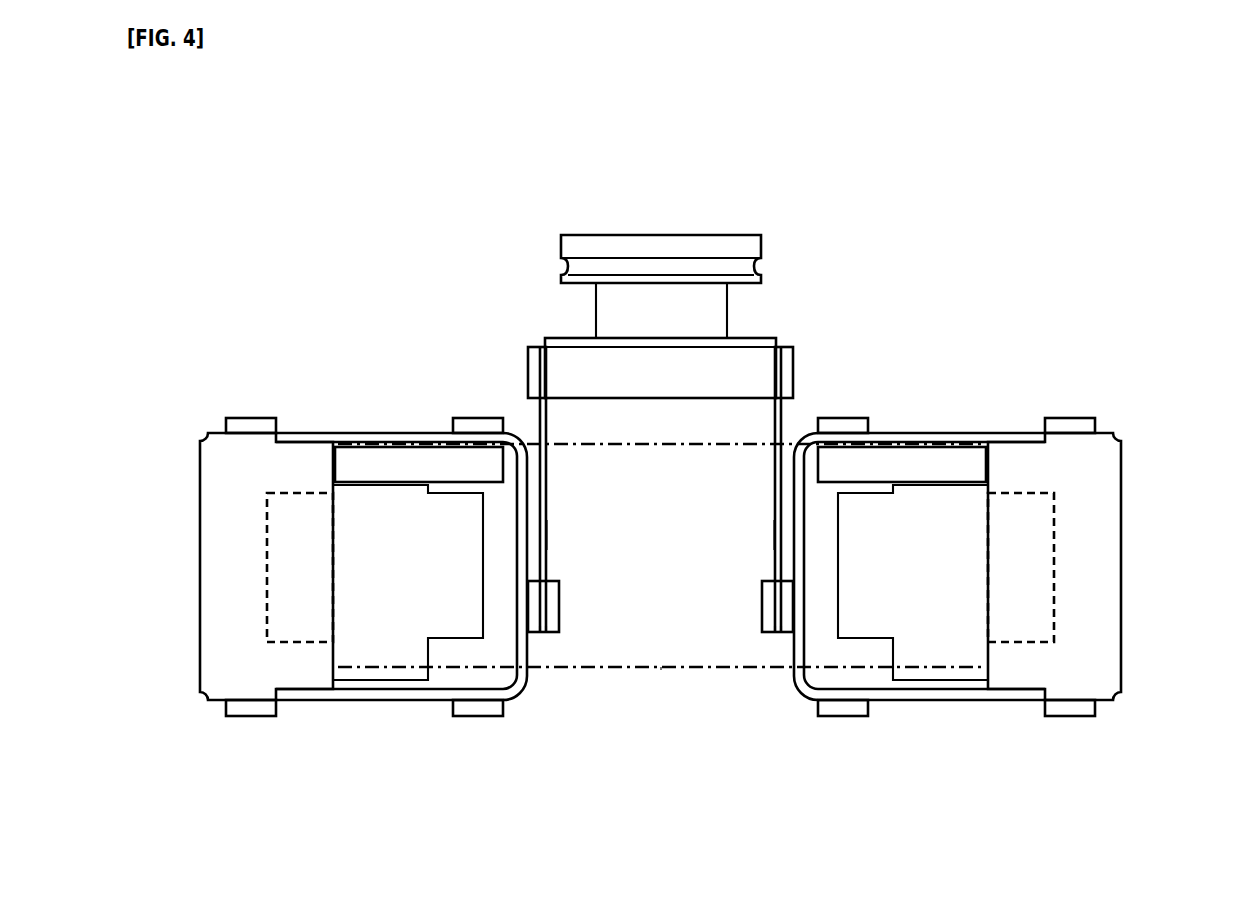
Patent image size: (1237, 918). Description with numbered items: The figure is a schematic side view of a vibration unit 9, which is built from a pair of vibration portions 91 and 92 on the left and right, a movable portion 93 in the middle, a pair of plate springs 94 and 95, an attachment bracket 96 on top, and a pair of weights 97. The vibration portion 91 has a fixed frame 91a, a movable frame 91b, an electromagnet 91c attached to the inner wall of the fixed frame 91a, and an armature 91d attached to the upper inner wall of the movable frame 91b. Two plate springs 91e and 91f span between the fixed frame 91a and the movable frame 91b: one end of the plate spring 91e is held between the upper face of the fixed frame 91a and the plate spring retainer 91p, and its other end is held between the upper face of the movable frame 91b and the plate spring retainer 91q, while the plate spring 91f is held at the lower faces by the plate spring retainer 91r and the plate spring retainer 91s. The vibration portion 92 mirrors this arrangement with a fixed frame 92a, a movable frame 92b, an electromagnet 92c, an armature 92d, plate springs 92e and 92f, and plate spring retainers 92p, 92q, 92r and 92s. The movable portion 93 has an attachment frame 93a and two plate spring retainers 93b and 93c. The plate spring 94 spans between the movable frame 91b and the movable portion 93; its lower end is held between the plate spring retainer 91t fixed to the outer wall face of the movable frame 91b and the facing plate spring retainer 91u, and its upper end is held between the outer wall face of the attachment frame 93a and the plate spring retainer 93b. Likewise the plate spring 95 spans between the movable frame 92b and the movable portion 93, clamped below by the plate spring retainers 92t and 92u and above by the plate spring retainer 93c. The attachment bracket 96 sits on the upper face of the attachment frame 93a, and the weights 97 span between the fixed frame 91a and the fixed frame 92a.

The vibration unit 9 is at (870, 170).
The vibration portion 91 is at (170, 397).
The fixed frame 91a is at (200, 568).
The movable frame 91b is at (528, 563).
The electromagnet 91c is at (400, 681).
The armature 91d is at (503, 463).
The plate spring 91e is at (331, 432).
The plate spring 91f is at (333, 701).
The plate spring retainer 91p is at (250, 417).
The plate spring retainer 91q is at (478, 417).
The plate spring retainer 91r is at (252, 718).
The plate spring retainer 91s is at (479, 718).
The plate spring retainer 91t is at (535, 633).
The plate spring retainer 91u is at (559, 604).
The vibration portion 92 is at (1151, 397).
The fixed frame 92a is at (1121, 568).
The movable frame 92b is at (793, 563).
The electromagnet 92c is at (921, 681).
The armature 92d is at (818, 463).
The plate spring 92e is at (990, 432).
The plate spring 92f is at (988, 701).
The plate spring retainer 92p is at (1070, 417).
The plate spring retainer 92q is at (845, 417).
The plate spring retainer 92r is at (1070, 718).
The plate spring retainer 92s is at (843, 718).
The plate spring retainer 92t is at (786, 633).
The plate spring retainer 92u is at (762, 604).
The movable portion 93 is at (656, 452).
The attachment frame 93a is at (660, 400).
The plate spring retainer 93b is at (528, 370).
The plate spring retainer 93c is at (793, 370).
The plate spring 94 is at (547, 535).
The plate spring 95 is at (775, 535).
The attachment bracket 96 is at (658, 233).
The weight 97 is at (662, 668).